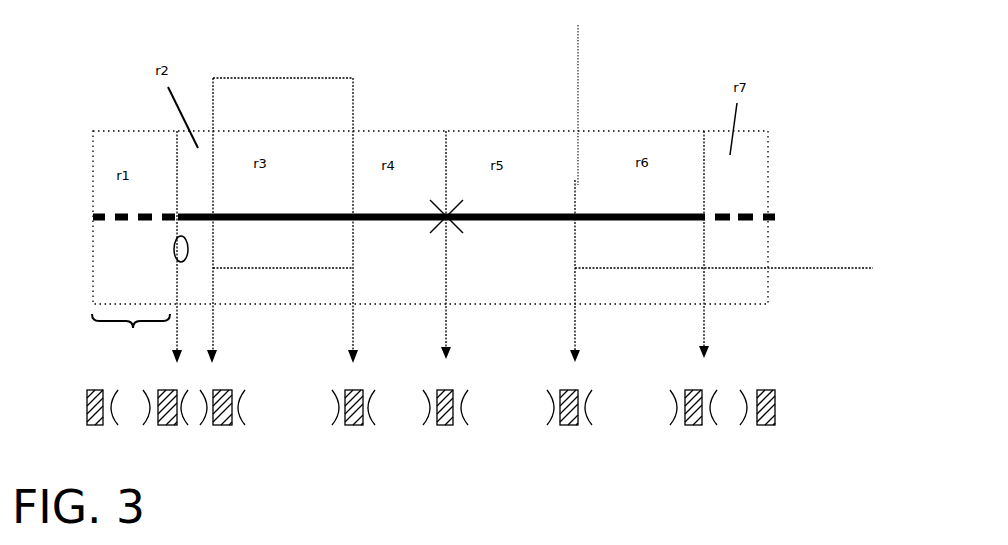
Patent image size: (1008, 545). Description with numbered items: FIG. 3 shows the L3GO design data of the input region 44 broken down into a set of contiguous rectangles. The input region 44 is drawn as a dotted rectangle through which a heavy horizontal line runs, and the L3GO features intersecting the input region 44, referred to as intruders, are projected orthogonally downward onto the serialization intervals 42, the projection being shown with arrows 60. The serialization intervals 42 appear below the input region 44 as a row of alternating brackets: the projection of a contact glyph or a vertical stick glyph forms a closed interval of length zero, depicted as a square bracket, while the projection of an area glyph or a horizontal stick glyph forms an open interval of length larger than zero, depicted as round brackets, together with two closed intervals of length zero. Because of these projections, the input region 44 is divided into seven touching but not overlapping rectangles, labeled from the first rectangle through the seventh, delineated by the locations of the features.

The serialization intervals 42 is at (812, 402).
The input region 44 is at (765, 162).
The arrows 60 is at (575, 317).